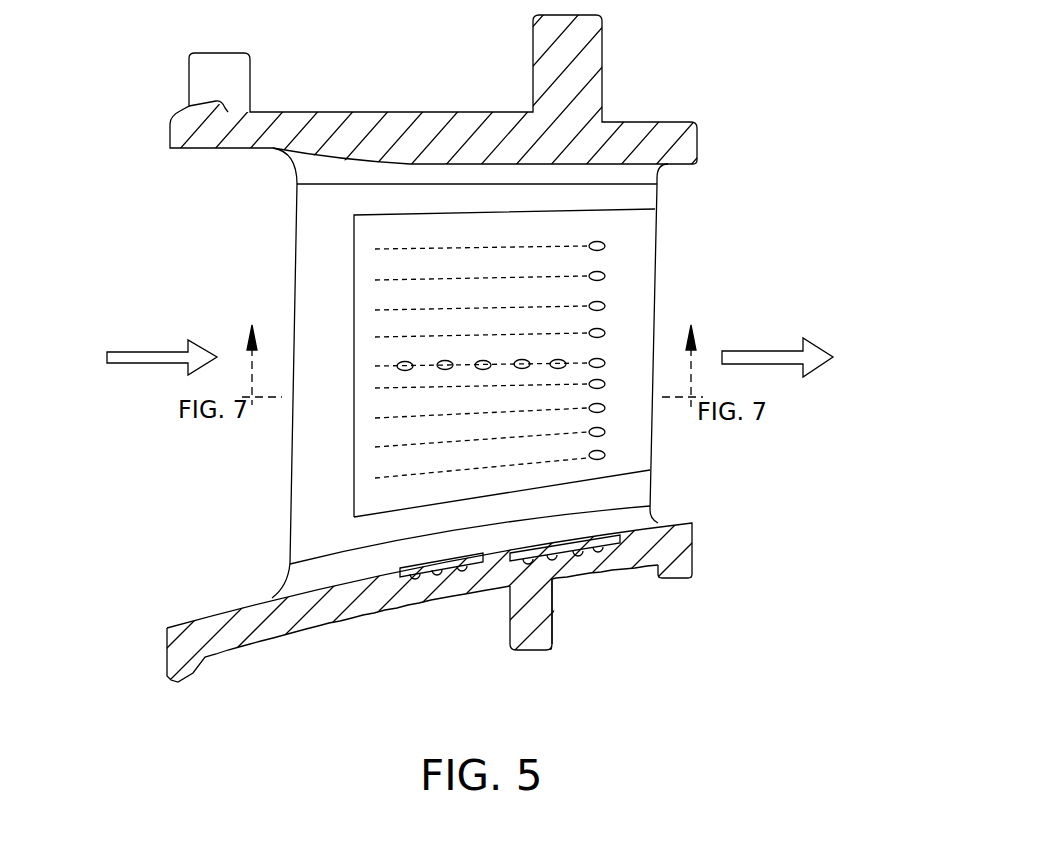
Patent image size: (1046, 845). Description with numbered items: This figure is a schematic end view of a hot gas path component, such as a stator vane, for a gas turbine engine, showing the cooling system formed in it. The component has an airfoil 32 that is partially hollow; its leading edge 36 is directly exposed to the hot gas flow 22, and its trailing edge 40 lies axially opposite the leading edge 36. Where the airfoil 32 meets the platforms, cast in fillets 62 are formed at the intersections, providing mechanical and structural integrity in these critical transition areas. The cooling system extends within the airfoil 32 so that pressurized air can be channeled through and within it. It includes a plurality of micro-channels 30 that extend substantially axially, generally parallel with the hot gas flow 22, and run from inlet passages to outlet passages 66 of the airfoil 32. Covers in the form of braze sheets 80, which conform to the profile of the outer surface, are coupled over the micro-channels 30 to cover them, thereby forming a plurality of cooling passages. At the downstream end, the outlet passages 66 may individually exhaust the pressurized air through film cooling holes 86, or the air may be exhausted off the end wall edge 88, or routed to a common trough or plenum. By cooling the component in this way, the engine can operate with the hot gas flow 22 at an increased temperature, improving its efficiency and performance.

The hot gas flow 22 is at (140, 352).
The micro-channels 30 is at (450, 248).
The airfoil 32 is at (282, 480).
The leading edge 36 is at (297, 240).
The trailing edge 40 is at (657, 252).
The cast in fillet 62 is at (286, 159).
The outlet passages 66 is at (412, 580).
The braze sheets 80 is at (635, 232).
The film cooling holes 86 is at (524, 359).
The end wall edge 88 is at (680, 546).